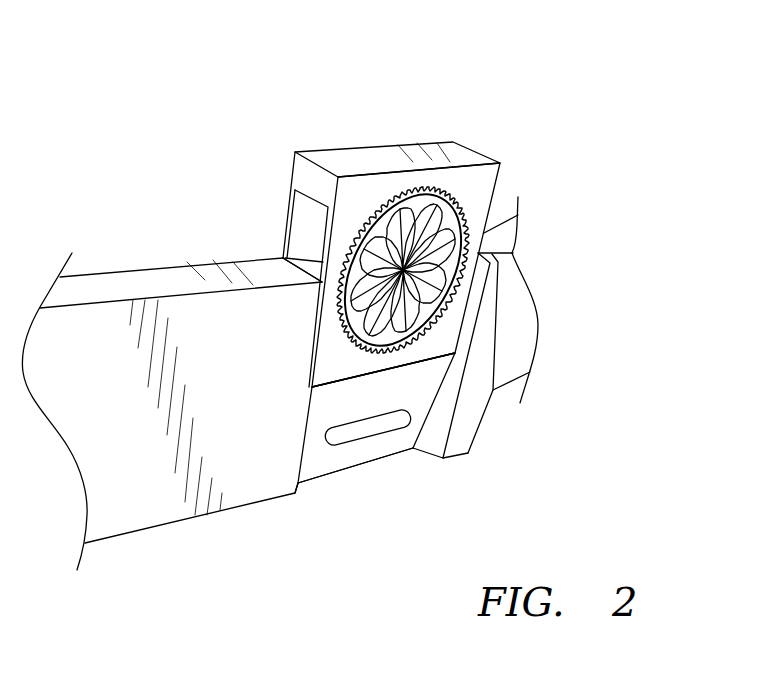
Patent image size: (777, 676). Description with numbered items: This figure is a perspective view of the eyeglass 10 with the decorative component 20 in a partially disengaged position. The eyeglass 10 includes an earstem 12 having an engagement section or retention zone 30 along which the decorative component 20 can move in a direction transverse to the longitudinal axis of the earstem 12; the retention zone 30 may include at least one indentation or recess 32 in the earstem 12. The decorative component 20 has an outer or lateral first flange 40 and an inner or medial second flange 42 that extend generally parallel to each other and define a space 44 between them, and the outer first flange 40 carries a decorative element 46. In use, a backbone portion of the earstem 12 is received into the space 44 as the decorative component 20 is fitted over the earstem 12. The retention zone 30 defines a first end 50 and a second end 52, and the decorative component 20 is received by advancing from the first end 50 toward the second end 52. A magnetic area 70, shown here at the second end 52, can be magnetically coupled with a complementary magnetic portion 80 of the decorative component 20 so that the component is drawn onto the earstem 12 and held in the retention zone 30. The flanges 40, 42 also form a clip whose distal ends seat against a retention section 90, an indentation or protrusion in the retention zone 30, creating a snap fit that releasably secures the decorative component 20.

The eyeglass 10 is at (126, 98).
The earstem 12 is at (167, 280).
The decorative component 20 is at (380, 157).
The retention zone 30 is at (393, 475).
The recess 32 is at (318, 478).
The first flange 40 is at (488, 215).
The second flange 42 is at (292, 192).
The space 44 is at (262, 227).
The decorative element 46 is at (420, 254).
The first end 50 is at (507, 177).
The second end 52 is at (420, 463).
The magnetic area 70 is at (390, 427).
The complementary magnetic portion 80 is at (446, 335).
The retention section 90 is at (333, 460).